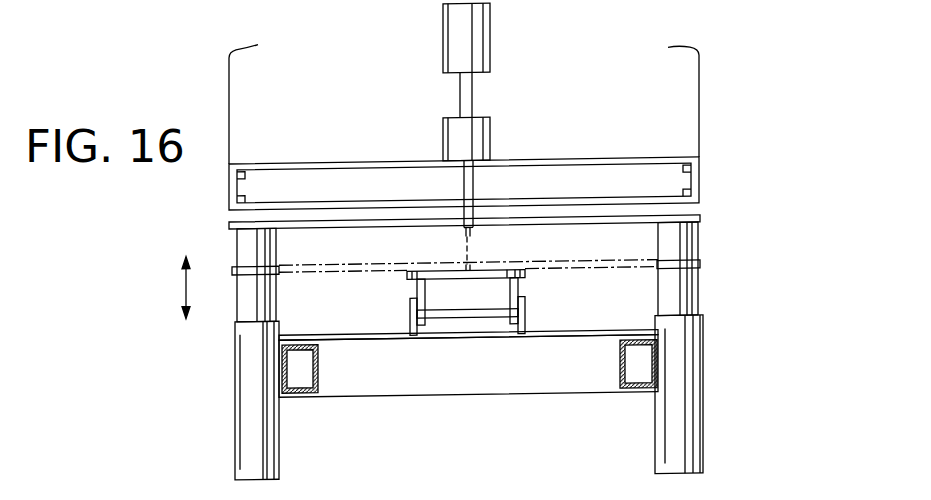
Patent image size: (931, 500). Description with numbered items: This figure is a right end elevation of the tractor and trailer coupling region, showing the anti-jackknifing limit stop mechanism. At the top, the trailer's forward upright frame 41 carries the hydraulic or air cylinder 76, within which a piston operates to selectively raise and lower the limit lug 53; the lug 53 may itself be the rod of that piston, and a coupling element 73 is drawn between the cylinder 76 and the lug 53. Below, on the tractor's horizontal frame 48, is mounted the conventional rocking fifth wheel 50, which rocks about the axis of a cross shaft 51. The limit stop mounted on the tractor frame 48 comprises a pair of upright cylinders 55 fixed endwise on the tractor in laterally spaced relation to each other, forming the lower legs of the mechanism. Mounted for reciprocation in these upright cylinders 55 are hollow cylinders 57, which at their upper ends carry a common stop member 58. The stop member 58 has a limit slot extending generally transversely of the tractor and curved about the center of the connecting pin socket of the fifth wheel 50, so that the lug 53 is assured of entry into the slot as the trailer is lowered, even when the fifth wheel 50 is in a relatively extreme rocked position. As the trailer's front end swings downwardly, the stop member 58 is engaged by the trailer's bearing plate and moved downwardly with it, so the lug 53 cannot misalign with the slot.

The forward upright frame 41 is at (678, 123).
The horizontal frame 48 is at (310, 394).
The rocking fifth wheel 50 is at (528, 279).
The cross shaft 51 is at (455, 311).
The limit lug 53 is at (470, 194).
The upright cylinders 55 is at (255, 393).
The hollow cylinders 57 is at (250, 252).
The stop member 58 is at (700, 222).
The coupling 73 is at (475, 141).
The hydraulic or air cylinder 76 is at (475, 41).